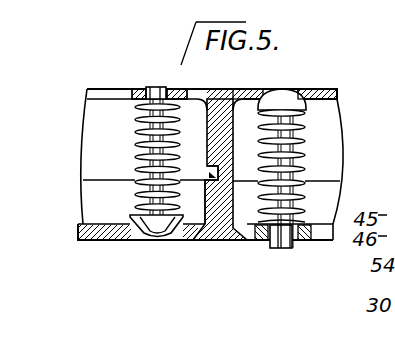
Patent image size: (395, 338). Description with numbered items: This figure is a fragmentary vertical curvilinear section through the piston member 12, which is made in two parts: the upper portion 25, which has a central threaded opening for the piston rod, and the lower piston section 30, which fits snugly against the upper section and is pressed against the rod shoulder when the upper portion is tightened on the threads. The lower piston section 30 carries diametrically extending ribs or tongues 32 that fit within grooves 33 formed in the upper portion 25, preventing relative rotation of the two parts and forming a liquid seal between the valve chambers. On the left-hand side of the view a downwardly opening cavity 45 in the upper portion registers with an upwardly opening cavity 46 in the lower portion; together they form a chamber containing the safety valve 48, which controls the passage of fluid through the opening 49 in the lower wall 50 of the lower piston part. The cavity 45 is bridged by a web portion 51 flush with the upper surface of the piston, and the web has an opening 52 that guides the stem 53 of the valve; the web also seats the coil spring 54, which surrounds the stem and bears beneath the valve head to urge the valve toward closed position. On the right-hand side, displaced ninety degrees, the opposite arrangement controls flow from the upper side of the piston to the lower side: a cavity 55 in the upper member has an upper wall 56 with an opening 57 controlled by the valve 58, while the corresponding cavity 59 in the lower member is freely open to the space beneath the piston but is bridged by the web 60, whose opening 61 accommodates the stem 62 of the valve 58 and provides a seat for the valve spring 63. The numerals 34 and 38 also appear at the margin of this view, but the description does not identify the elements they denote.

The piston member 12 is at (76, 229).
The upper portion of the piston 25 is at (226, 98).
The lower piston section 30 is at (210, 242).
The ribs or tongues 32 is at (207, 183).
The grooves 33 is at (210, 170).
The adjacent figure reference 34 is at (383, 200).
The adjacent figure reference 38 is at (382, 138).
The cavity 45 is at (93, 128).
The cavity 46 is at (97, 192).
The safety valve 48 is at (158, 238).
The opening 49 is at (143, 238).
The lower wall 50 is at (89, 241).
The web portion 51 is at (140, 89).
The opening 52 is at (179, 83).
The stem 53 is at (157, 87).
The coil spring 54 is at (137, 134).
The cavity 55 is at (326, 128).
The upper wall 56 is at (313, 97).
The opening 57 is at (288, 151).
The valve 58 is at (276, 98).
The cavity 59 is at (333, 190).
The web 60 is at (303, 242).
The opening 61 is at (260, 242).
The stem 62 is at (282, 246).
The valve spring 63 is at (306, 153).